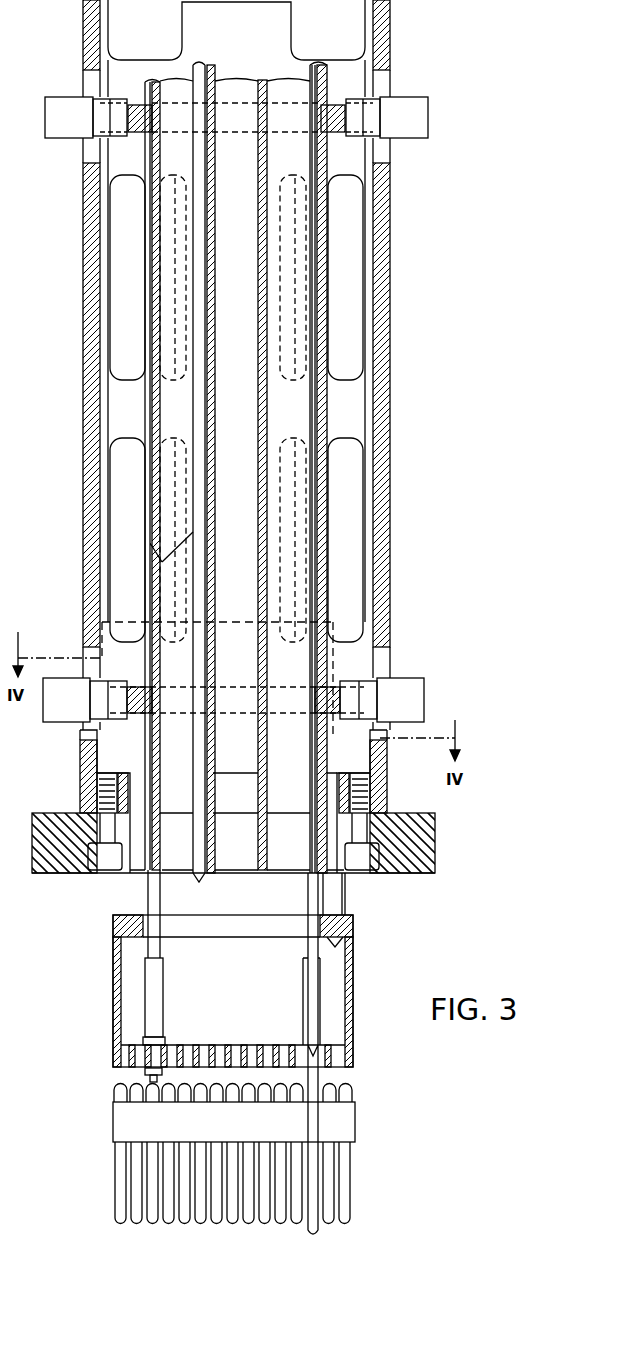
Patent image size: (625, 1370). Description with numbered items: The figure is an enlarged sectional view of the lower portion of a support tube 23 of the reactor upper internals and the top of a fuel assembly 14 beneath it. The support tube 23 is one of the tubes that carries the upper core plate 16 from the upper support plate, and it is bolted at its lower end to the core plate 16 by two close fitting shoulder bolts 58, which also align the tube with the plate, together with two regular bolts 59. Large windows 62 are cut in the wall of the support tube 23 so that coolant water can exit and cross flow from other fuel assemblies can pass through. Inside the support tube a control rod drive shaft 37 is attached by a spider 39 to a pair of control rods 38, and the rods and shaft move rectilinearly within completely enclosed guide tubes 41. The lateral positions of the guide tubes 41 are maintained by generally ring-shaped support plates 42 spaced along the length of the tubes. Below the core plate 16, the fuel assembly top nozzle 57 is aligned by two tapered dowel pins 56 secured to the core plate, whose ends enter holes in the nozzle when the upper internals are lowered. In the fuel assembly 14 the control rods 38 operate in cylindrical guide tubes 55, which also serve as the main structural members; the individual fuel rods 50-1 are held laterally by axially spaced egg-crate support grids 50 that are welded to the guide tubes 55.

The fuel assemblies 14 is at (346, 1115).
The upper core plate 16 is at (428, 853).
The support tube 23 is at (392, 194).
The control rod drive shaft 37 is at (201, 66).
The control rods 38 is at (318, 66).
The spider 39 is at (182, 658).
The guide tubes 41 is at (321, 411).
The support plates 42 is at (136, 687).
The egg-crate support grids 50 is at (113, 1129).
The fuel rods 50-1 is at (117, 1184).
The cylindrical guide tubes 55 is at (157, 981).
The dowel pins 56 is at (340, 903).
The fuel assembly top nozzle 57 is at (353, 987).
The shoulder bolts 58 is at (111, 862).
The regular bolts 59 is at (370, 790).
The windows 62 is at (118, 182).